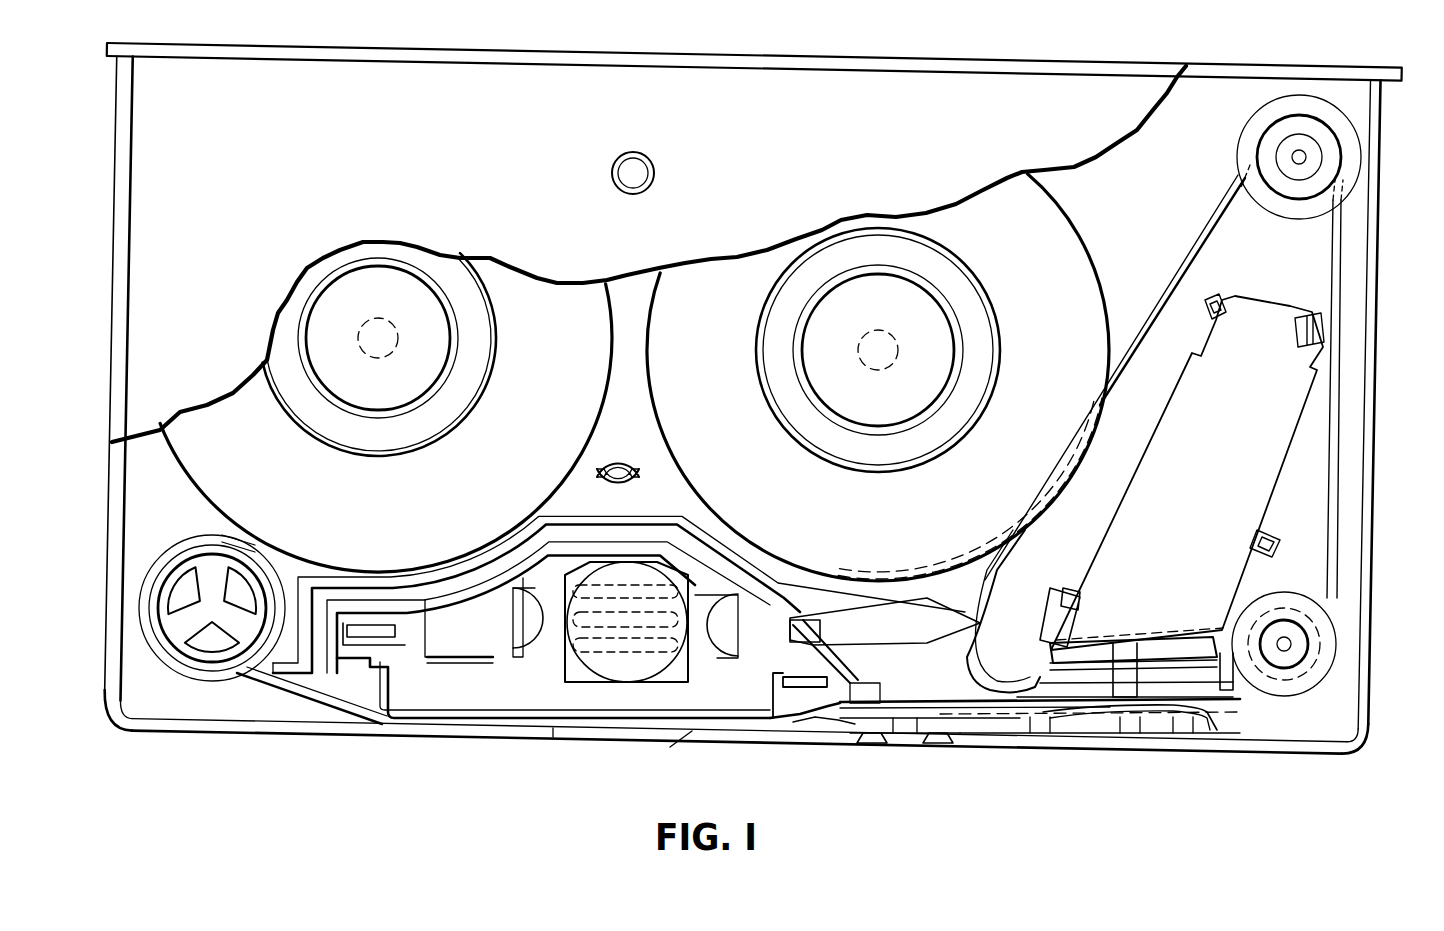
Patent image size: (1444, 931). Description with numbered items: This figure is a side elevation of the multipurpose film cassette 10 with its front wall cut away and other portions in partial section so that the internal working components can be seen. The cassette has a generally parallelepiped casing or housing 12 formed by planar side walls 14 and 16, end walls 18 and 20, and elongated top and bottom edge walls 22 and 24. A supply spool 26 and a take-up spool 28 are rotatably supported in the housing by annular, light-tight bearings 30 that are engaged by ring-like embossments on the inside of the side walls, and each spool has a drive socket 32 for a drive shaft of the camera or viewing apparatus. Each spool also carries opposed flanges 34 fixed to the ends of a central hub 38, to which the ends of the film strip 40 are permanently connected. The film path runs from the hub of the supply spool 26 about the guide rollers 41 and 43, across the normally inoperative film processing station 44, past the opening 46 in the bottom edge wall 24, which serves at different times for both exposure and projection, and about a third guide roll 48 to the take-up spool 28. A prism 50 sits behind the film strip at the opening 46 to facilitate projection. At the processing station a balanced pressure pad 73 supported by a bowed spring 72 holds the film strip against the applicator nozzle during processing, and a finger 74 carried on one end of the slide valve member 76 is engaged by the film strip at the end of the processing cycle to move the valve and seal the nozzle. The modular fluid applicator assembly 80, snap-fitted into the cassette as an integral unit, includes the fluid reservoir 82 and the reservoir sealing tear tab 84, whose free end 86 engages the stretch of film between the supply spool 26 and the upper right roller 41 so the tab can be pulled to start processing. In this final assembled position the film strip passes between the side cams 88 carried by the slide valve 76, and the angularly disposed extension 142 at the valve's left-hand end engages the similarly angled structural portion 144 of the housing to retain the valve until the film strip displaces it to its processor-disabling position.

The cassette 10 is at (737, 400).
The casing or housing 12 is at (95, 640).
The side wall 14 is at (362, 172).
The side wall 16 is at (630, 422).
The end wall 18 is at (110, 298).
The end wall 20 is at (1380, 312).
The top edge wall 22 is at (822, 58).
The bottom edge wall 24 is at (238, 733).
The supply spool 26 is at (719, 314).
The take-up spool 28 is at (324, 516).
The annular, light-tight bearings 30 is at (497, 372).
The drive socket 32 is at (413, 390).
The flange 34 is at (712, 484).
The central hub 38 is at (860, 350).
The film strip 40 is at (340, 710).
The guide roller 41 is at (1355, 150).
The guide roller 43 is at (1330, 642).
The film processing station 44 is at (1253, 596).
The opening 46 is at (690, 733).
The third guide roll 48 is at (182, 655).
The prism 50 is at (566, 667).
The bowed spring 72 is at (1180, 736).
The balanced pressure pad 73 is at (1225, 713).
The finger 74 is at (813, 735).
The valve member 76 is at (916, 698).
The modular fluid applicator assembly 80 is at (1150, 420).
The fluid reservoir 82 is at (1232, 459).
The reservoir sealing tear tab 84 is at (1010, 586).
The free end of the tear tab 86 is at (1165, 310).
The side cams 88 is at (992, 735).
The angularly disposed extension 142 is at (808, 652).
The angularly disposed structural portion 144 is at (823, 647).